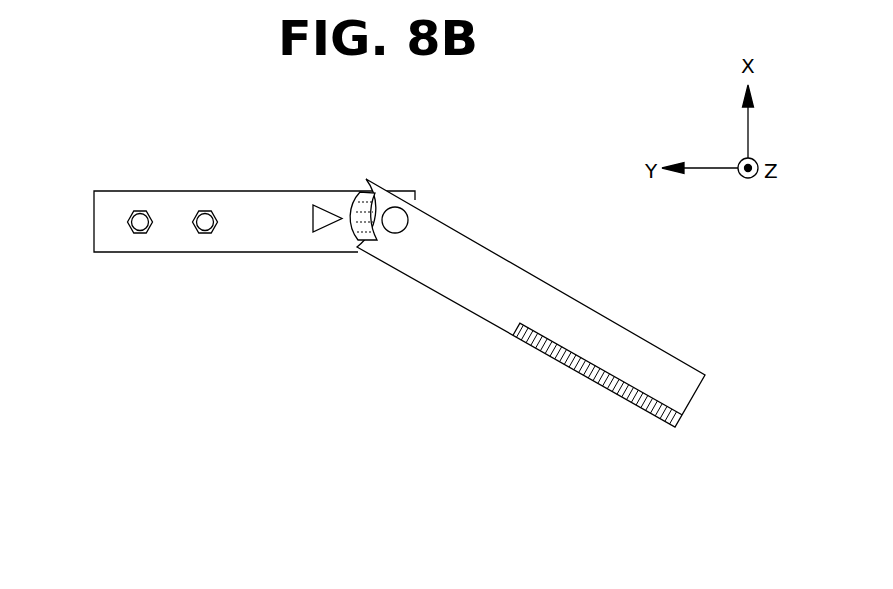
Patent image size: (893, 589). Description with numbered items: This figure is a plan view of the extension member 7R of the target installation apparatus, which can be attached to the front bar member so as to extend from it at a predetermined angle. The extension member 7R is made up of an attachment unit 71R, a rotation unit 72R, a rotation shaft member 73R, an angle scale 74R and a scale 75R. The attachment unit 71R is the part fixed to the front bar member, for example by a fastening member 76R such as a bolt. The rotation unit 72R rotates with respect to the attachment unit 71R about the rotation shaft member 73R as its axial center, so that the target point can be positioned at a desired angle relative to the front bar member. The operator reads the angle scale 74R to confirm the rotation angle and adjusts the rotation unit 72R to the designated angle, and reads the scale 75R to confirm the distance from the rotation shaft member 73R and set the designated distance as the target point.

The extension member 7R is at (322, 372).
The attachment unit 71R is at (165, 252).
The rotation unit 72R is at (706, 380).
The rotation shaft member 73R is at (388, 207).
The angle scale 74R is at (352, 202).
The scale 75R is at (570, 343).
The fastening member 76R is at (133, 212).